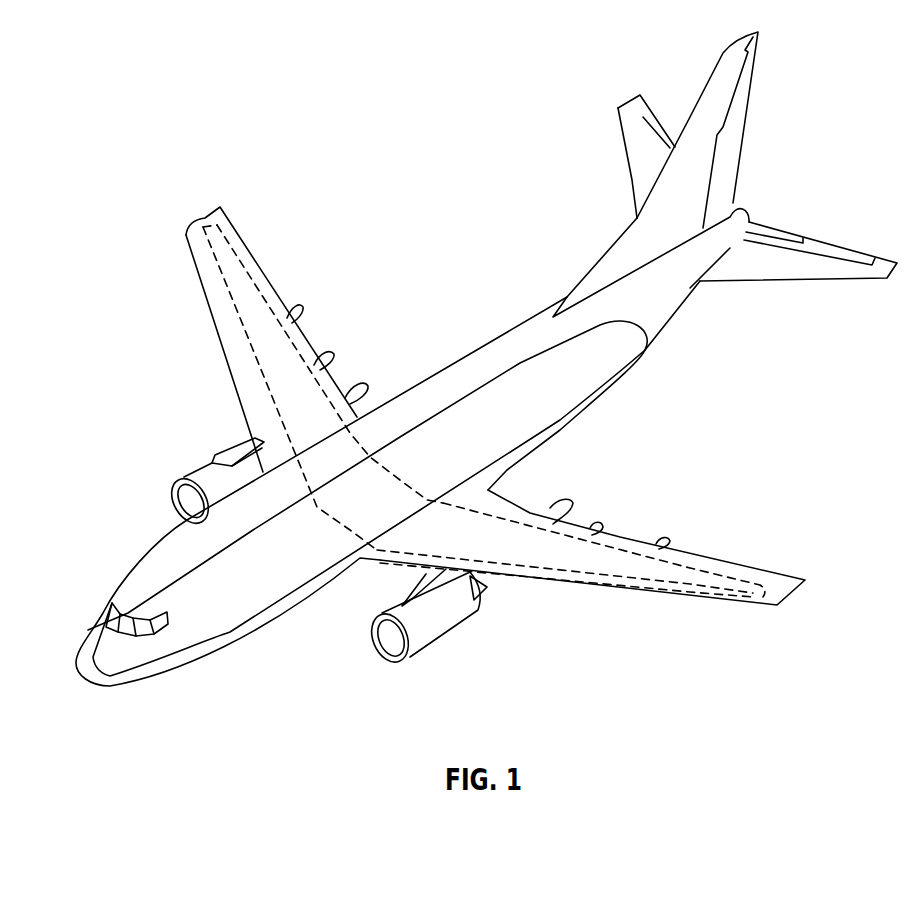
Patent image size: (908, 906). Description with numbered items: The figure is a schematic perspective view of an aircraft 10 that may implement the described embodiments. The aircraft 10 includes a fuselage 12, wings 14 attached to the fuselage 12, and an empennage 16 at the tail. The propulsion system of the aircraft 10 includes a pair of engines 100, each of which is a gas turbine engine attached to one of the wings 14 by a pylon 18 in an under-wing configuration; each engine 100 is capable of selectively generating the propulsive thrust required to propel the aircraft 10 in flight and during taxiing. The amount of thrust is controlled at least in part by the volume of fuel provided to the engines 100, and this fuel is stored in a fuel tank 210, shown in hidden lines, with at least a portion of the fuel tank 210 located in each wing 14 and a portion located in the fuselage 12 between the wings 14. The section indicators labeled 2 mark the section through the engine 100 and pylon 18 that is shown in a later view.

The aircraft 10 is at (208, 420).
The fuselage 12 is at (538, 424).
The wings 14 is at (198, 256).
The empennage 16 is at (752, 152).
The pylon 18 is at (475, 602).
The engine 100 is at (457, 643).
The fuel tank 210 is at (628, 540).
The section view indicator 2 is at (470, 547).